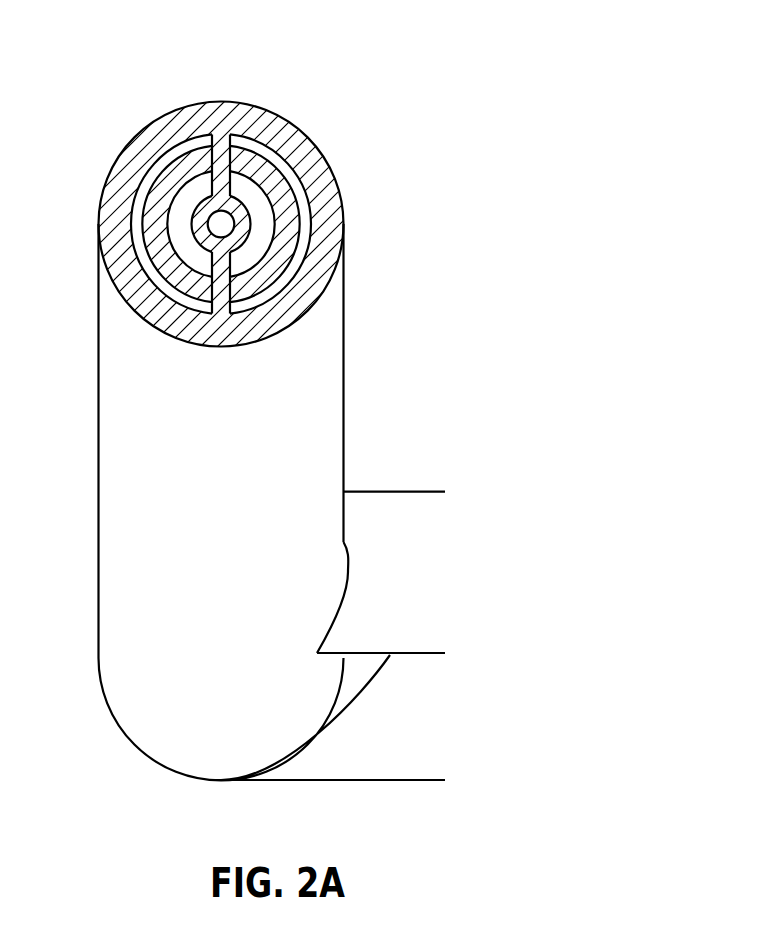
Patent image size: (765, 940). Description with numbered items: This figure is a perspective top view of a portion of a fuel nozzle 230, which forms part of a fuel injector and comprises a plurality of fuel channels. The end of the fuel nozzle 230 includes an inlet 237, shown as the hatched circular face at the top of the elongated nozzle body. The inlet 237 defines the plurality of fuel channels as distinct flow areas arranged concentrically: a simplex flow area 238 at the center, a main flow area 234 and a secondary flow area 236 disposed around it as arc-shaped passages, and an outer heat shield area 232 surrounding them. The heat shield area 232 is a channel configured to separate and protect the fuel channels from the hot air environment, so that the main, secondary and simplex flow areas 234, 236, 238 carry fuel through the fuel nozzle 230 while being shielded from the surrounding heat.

The fuel nozzle 230 is at (117, 435).
The heat shield area 232 is at (307, 213).
The main flow area 234 is at (253, 195).
The secondary flow area 236 is at (190, 197).
The inlet 237 is at (132, 133).
The simplex flow area 238 is at (221, 213).